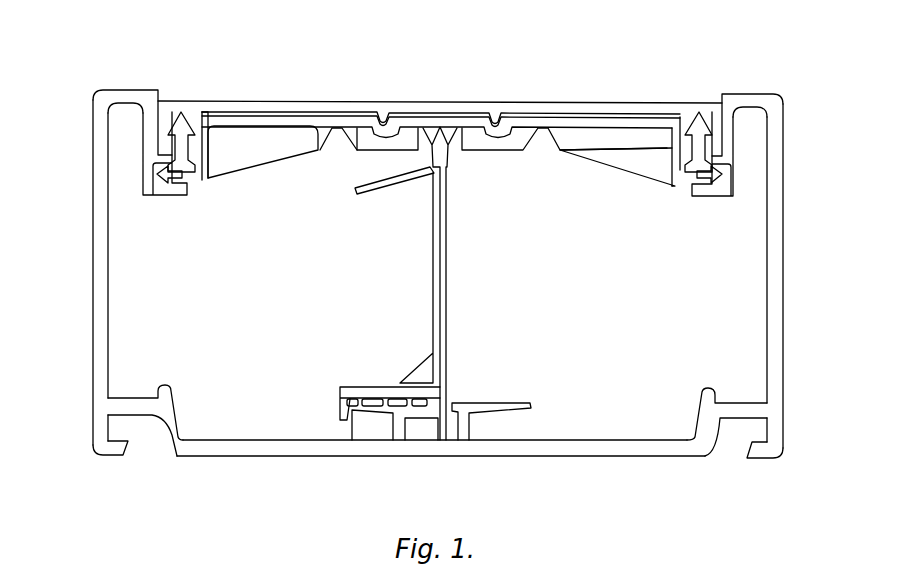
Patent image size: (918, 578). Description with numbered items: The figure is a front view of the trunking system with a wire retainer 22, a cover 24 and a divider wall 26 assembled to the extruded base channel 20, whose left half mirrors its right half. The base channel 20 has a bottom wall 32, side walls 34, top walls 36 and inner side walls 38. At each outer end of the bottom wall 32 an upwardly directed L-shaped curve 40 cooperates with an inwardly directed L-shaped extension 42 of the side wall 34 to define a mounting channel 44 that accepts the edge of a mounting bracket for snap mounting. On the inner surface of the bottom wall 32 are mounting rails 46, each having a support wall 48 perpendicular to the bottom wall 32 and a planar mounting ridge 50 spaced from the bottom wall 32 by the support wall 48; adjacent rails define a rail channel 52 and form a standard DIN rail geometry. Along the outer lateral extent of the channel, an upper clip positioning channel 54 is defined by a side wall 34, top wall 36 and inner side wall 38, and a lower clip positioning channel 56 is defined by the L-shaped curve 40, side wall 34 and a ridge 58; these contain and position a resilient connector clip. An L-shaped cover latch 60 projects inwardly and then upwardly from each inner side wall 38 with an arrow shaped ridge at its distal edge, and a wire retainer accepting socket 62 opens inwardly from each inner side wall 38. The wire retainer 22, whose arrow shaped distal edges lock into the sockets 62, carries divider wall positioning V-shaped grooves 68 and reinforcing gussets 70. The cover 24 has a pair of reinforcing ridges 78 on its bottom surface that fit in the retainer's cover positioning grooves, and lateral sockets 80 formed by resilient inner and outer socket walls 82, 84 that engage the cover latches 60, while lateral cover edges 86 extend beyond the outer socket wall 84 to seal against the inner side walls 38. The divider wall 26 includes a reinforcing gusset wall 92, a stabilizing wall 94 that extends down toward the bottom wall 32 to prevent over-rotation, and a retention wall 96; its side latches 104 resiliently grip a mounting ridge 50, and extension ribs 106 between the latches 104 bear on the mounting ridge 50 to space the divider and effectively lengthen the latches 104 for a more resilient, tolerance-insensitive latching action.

The base channel 20 is at (795, 252).
The wire retainer 22 is at (600, 165).
The cover 24 is at (280, 102).
The divider wall 26 is at (452, 292).
The bottom wall 32 is at (228, 458).
The side walls 34 is at (93, 270).
The top walls 36 is at (120, 90).
The inner side walls 38 is at (735, 147).
The L-shaped curves 40 is at (183, 413).
The L-shaped extensions 42 is at (100, 457).
The mounting channels 44 is at (737, 430).
The mounting rails 46 is at (558, 400).
The support wall 48 is at (482, 428).
The mounting ridge 50 is at (470, 404).
The rail channel 52 is at (457, 432).
The upper clip positioning channel 54 is at (130, 180).
The lower clip positioning channel 56 is at (745, 403).
The ridge 58 is at (168, 386).
The cover latch 60 is at (701, 112).
The wire retainer accepting socket 62 is at (700, 192).
The divider wall positioning V-shaped grooves 68 is at (545, 150).
The reinforcing gussets 70 is at (255, 175).
The reinforcing ridges 78 is at (495, 118).
The lateral sockets 80 is at (190, 188).
The inner socket wall 82 is at (205, 112).
The outer socket wall 84 is at (170, 128).
The lateral cover edges 86 is at (172, 112).
The reinforcing gusset wall 92 is at (418, 360).
The stabilizing wall 94 is at (445, 438).
The retention wall 96 is at (378, 192).
The side latches 104 is at (342, 410).
The extension ribs 106 is at (385, 402).